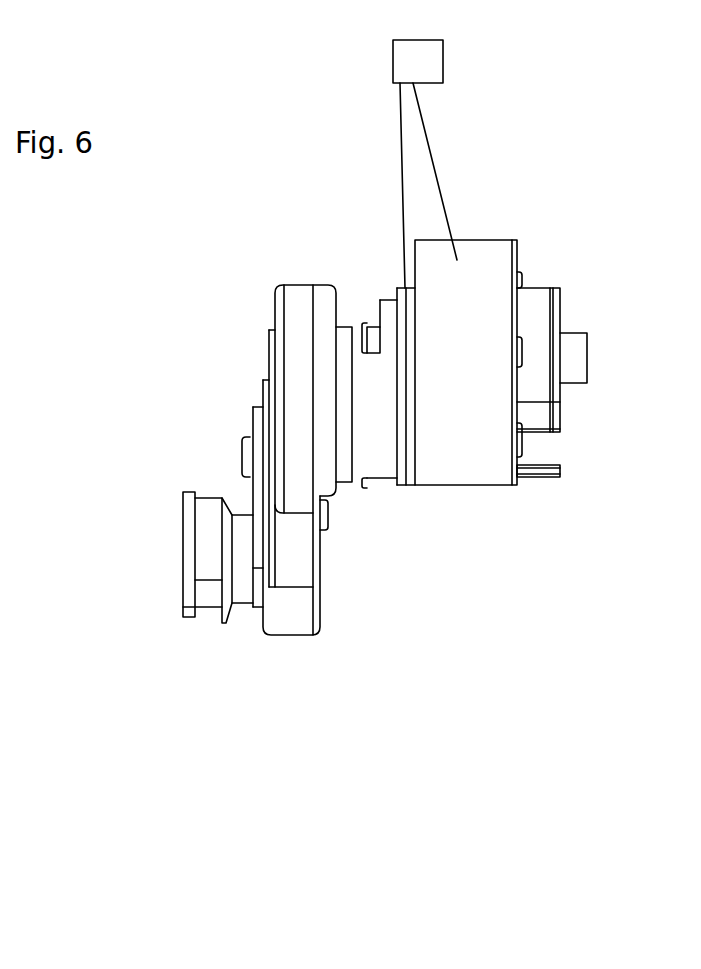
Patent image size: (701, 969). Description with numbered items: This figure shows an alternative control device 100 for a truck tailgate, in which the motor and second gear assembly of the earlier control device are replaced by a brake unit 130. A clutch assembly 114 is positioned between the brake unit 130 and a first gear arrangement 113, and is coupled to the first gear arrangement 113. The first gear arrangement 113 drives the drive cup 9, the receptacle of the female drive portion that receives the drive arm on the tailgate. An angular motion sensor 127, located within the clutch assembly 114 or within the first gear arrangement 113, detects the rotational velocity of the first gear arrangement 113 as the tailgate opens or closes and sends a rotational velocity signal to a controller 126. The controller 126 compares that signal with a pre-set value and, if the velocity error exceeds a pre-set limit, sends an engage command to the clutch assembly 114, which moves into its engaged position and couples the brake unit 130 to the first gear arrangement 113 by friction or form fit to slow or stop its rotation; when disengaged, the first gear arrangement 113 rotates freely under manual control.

The control device 100 is at (257, 260).
The first gear arrangement 113 is at (325, 296).
The drive cup 9 is at (207, 602).
The angular motion sensor 127 is at (409, 428).
The clutch assembly 114 is at (480, 443).
The brake unit 130 is at (567, 457).
The controller 126 is at (443, 63).